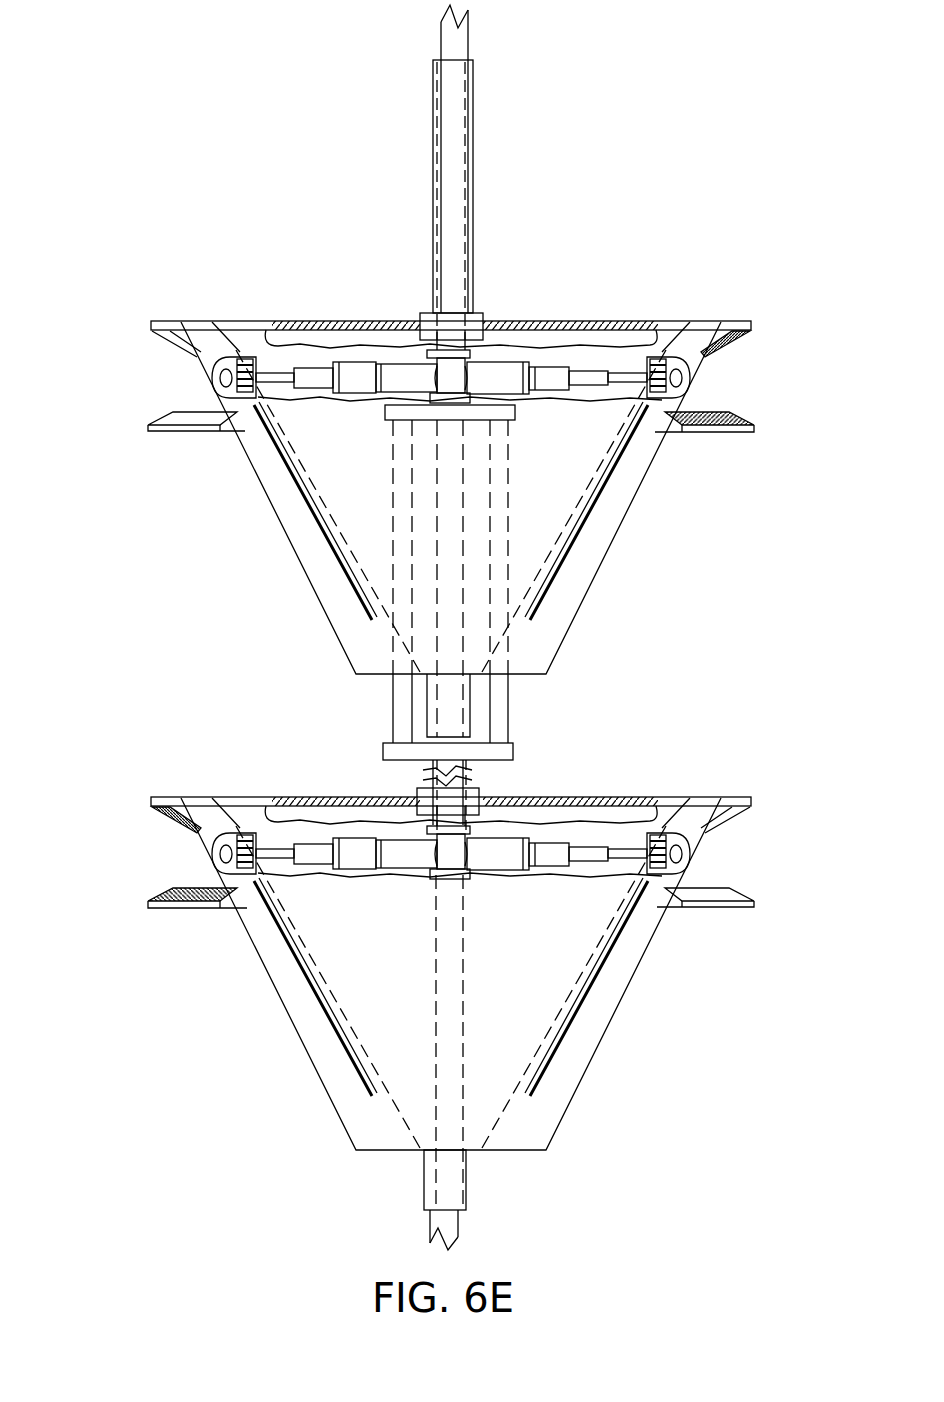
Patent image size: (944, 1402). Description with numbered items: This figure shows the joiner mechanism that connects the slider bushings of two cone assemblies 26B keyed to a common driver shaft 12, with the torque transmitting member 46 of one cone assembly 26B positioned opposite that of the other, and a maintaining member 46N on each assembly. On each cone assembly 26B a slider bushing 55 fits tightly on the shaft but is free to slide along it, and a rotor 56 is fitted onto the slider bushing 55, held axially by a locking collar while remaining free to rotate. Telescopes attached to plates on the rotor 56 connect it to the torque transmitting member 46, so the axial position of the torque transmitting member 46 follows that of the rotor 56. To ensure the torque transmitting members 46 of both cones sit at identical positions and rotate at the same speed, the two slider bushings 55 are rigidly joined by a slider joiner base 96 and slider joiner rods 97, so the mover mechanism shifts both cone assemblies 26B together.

The driver shaft 12 is at (452, 28).
The slider bushing 55 is at (469, 203).
The rotor 56 is at (483, 335).
The slider joiner rods 97 is at (498, 538).
The slider joiner base 96 is at (513, 748).
The cone assembly B 26B is at (337, 581).
The torque transmitting member 46 is at (717, 434).
The maintaining member 46N is at (203, 424).